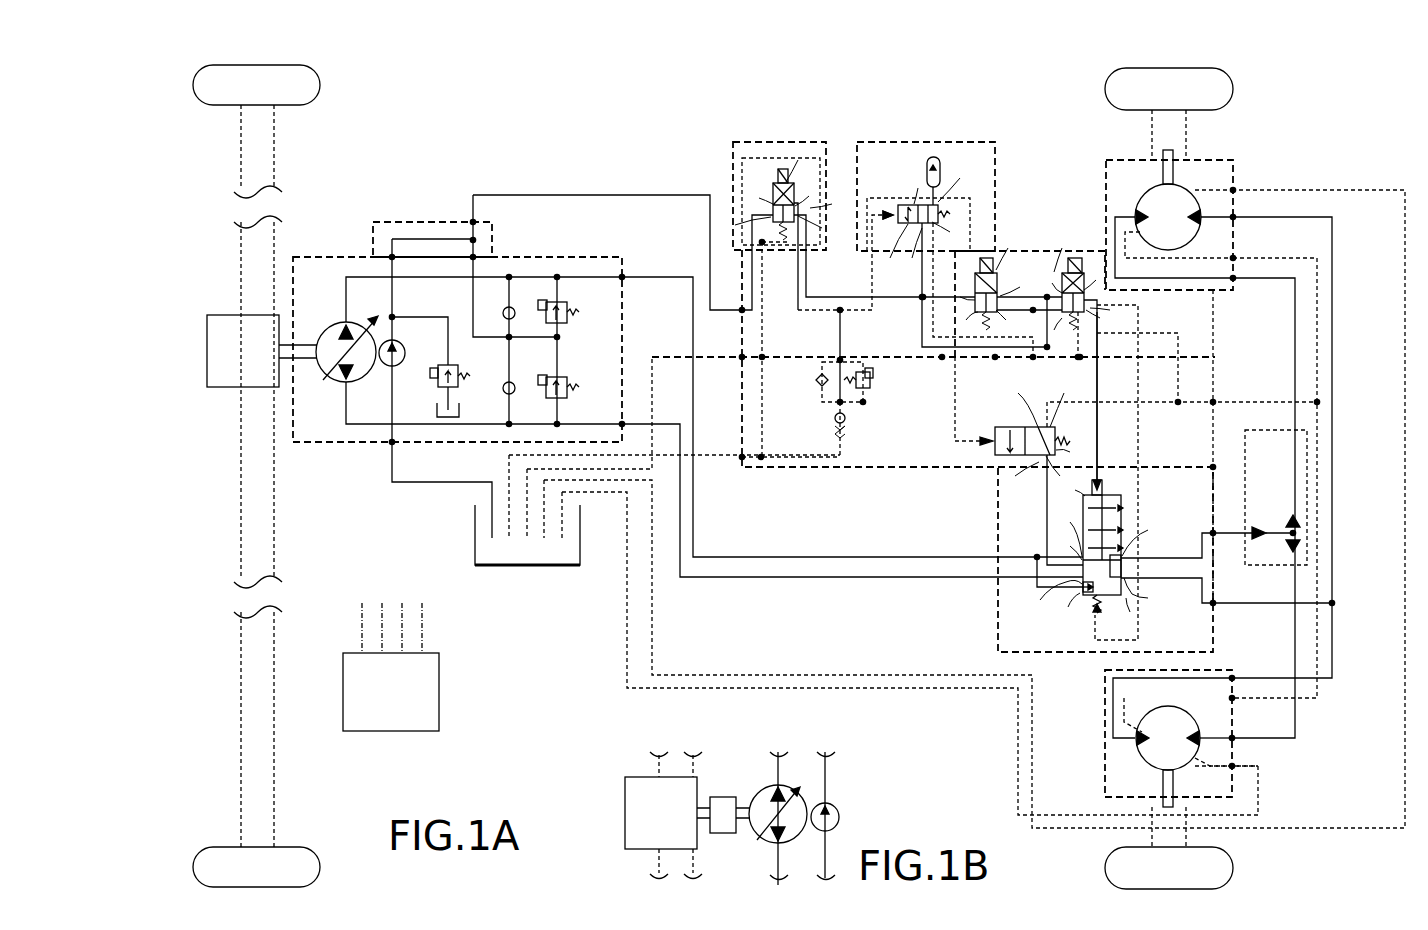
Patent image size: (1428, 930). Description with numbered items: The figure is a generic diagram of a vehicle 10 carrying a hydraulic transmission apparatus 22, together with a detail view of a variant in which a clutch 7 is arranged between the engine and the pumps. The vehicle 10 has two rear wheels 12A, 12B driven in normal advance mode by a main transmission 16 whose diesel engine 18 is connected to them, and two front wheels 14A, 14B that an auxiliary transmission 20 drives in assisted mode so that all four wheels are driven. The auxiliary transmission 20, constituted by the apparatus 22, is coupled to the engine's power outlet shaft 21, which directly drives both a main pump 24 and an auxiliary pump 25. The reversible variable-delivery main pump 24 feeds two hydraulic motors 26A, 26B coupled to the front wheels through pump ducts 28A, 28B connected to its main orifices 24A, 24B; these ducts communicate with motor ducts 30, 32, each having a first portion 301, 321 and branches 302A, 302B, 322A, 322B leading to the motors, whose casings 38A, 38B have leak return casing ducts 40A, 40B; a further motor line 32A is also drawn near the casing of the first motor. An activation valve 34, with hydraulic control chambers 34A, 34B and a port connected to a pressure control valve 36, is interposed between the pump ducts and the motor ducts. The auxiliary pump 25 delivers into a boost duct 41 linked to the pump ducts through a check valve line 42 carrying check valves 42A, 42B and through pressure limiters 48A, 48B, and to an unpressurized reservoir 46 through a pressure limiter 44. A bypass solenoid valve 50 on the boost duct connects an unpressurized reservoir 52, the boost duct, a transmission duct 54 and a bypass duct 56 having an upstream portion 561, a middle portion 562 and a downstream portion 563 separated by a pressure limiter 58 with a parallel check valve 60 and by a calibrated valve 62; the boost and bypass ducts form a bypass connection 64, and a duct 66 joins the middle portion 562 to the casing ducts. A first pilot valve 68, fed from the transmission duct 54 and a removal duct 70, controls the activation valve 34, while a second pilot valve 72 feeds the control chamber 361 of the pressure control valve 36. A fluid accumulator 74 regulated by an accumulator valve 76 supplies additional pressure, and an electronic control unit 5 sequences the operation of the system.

In FIG. 1A, the controller 5 is at (391, 667).
In FIG. 1B, the clutch 7 is at (720, 796).
In FIG. 1A, the vehicle 10 is at (490, 745).
In FIG. 1A, the front wheel 12A is at (312, 90).
In FIG. 1A, the front wheel 12B is at (312, 872).
In FIG. 1A, the rear wheel 14A is at (1225, 92).
In FIG. 1A, the rear wheel 14B is at (1225, 872).
In FIG. 1A, the front axle 16 is at (302, 212).
In FIG. 1A, the motor 18 is at (239, 314).
In FIG. 1B, the motor 18 is at (650, 776).
In FIG. 1A, the hydraulic pressure supply unit 20 is at (511, 155).
In FIG. 1A, the drive shaft 21 is at (302, 352).
In FIG. 1A, the pump unit 22 is at (636, 185).
In FIG. 1A, the main pump 24 is at (345, 350).
In FIG. 1B, the main pump 24 is at (766, 843).
In FIG. 1A, the pump port 24A is at (346, 324).
In FIG. 1A, the pump port 24B is at (352, 382).
In FIG. 1A, the charge pump 25 is at (404, 352).
In FIG. 1B, the charge pump 25 is at (839, 812).
In FIG. 1A, the hydraulic motor 26A is at (1178, 205).
In FIG. 1A, the hydraulic motor 26B is at (1140, 755).
In FIG. 1A, the main line 28A is at (816, 557).
In FIG. 1A, the main line 28B is at (812, 580).
In FIG. 1A, the shuttle valve 30 is at (1232, 534).
In FIG. 1A, the line 32 is at (1236, 602).
In FIG. 1A, the motor line 32A is at (1238, 240).
In FIG. 1A, the control valve 34 is at (1145, 479).
In FIG. 1A, the solenoid 34A is at (1098, 480).
In FIG. 1A, the spring 34B is at (1092, 616).
In FIG. 1A, the pilot valve 36 is at (984, 461).
In FIG. 1A, the motor unit 38A is at (1106, 184).
In FIG. 1A, the motor unit 38B is at (1104, 722).
In FIG. 1A, the drain line 40A is at (1265, 262).
In FIG. 1A, the drain line 40B is at (1260, 700).
In FIG. 1A, the charge line 41 is at (586, 194).
In FIG. 1A, the check valve line 42 is at (497, 348).
In FIG. 1A, the check valve 42A is at (512, 305).
In FIG. 1A, the check valve 42B is at (506, 394).
In FIG. 1A, the relief valve 44 is at (436, 385).
In FIG. 1A, the tank 46 is at (432, 412).
In FIG. 1A, the relief valve 48A is at (562, 306).
In FIG. 1A, the relief valve 48B is at (562, 380).
In FIG. 1A, the switching valve 50 is at (752, 173).
In FIG. 1A, the reservoir 52 is at (475, 538).
In FIG. 1A, the line 54 is at (920, 344).
In FIG. 1A, the pressure control block 56 is at (834, 320).
In FIG. 1A, the relief valve 58 is at (872, 382).
In FIG. 1A, the check valve 60 is at (816, 380).
In FIG. 1A, the relief valve 62 is at (846, 440).
In FIG. 1A, the line 64 is at (638, 210).
In FIG. 1A, the pilot line 66 is at (1255, 400).
In FIG. 1A, the switching valve 68 is at (1079, 258).
In FIG. 1A, the valve block 70 is at (972, 348).
In FIG. 1A, the switching valve 72 is at (978, 276).
In FIG. 1A, the accumulator 74 is at (940, 158).
In FIG. 1A, the pressure reducing valve 76 is at (902, 198).
In FIG. 1A, the line 301 is at (1182, 552).
In FIG. 1A, the line 302A is at (1297, 352).
In FIG. 1A, the line 302B is at (1295, 730).
In FIG. 1A, the line 321 is at (1180, 582).
In FIG. 1A, the line 322A is at (1334, 470).
In FIG. 1A, the line 322B is at (1334, 665).
In FIG. 1A, the pilot port 361 is at (972, 435).
In FIG. 1A, the line 561 is at (842, 338).
In FIG. 1A, the check valve 562 is at (846, 412).
In FIG. 1A, the line 563 is at (812, 430).